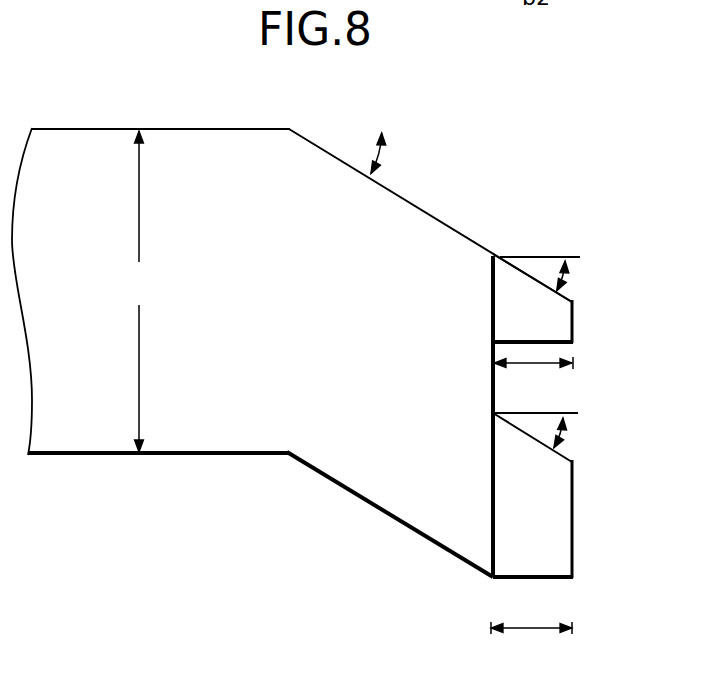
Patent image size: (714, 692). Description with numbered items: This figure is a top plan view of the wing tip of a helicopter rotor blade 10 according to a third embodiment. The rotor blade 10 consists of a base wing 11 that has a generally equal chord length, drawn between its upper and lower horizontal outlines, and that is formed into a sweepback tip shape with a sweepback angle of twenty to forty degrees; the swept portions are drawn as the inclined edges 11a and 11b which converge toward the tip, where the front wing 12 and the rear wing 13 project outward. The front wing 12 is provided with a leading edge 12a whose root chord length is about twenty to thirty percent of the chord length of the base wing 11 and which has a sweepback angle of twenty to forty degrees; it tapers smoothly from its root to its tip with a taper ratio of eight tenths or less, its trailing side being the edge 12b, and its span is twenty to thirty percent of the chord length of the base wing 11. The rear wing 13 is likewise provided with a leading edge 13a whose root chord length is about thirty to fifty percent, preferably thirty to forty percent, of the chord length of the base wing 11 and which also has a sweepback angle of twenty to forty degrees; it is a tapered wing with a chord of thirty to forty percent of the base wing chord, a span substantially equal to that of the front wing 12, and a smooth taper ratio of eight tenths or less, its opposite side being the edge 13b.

The rotor blade 10 is at (139, 86).
The base wing 11 is at (232, 150).
The upper tapered surface of blade 11a is at (457, 228).
The lower tapered surface of blade 11b is at (358, 498).
The front wing 12 is at (565, 317).
The leading edge 12a is at (573, 301).
The lower surface of first tip plate 12b is at (551, 341).
The rear wing 13 is at (565, 533).
The leading edge 13a is at (573, 461).
The lower surface of second tip plate 13b is at (555, 580).